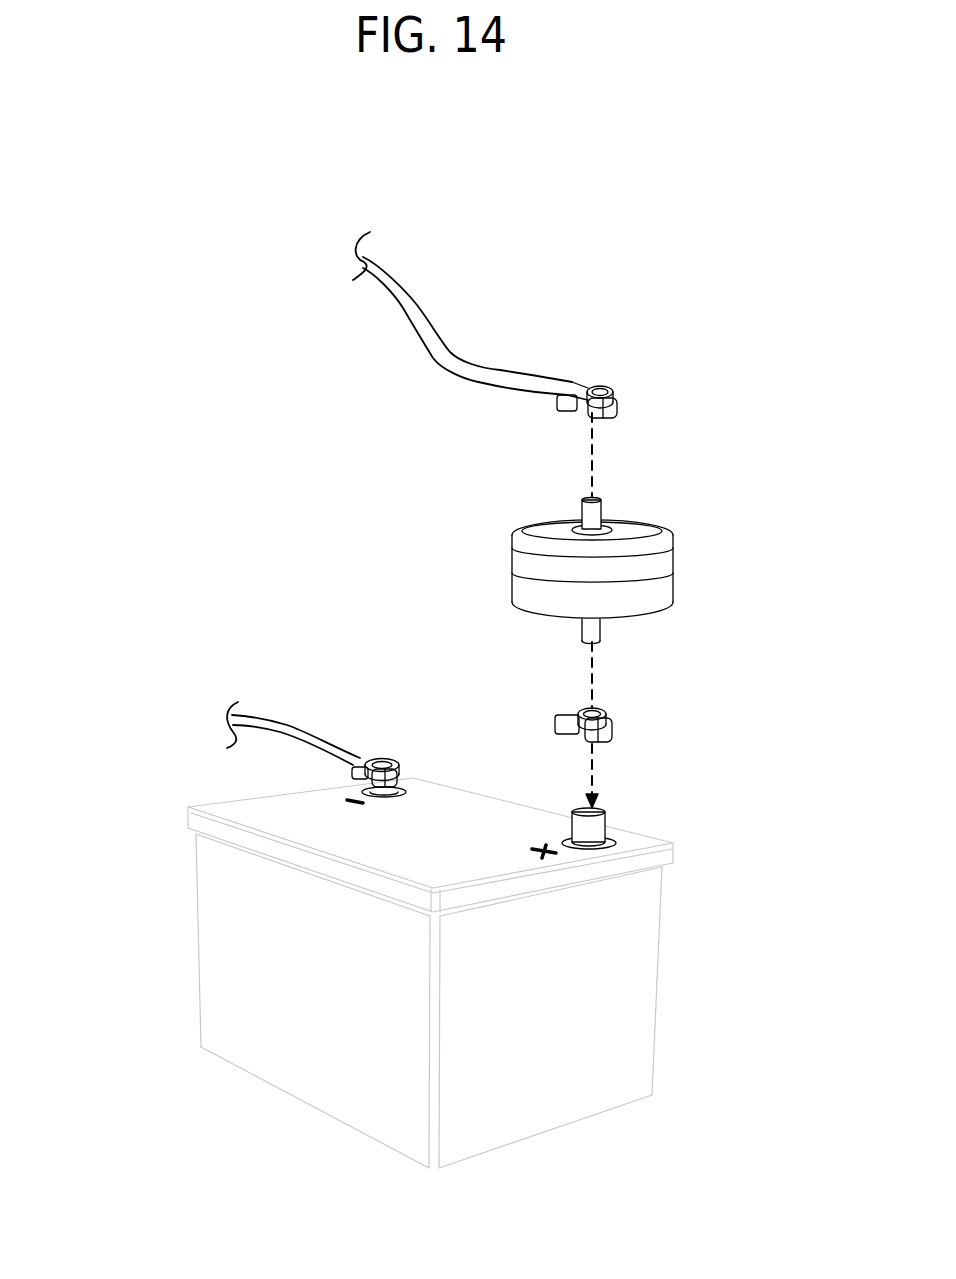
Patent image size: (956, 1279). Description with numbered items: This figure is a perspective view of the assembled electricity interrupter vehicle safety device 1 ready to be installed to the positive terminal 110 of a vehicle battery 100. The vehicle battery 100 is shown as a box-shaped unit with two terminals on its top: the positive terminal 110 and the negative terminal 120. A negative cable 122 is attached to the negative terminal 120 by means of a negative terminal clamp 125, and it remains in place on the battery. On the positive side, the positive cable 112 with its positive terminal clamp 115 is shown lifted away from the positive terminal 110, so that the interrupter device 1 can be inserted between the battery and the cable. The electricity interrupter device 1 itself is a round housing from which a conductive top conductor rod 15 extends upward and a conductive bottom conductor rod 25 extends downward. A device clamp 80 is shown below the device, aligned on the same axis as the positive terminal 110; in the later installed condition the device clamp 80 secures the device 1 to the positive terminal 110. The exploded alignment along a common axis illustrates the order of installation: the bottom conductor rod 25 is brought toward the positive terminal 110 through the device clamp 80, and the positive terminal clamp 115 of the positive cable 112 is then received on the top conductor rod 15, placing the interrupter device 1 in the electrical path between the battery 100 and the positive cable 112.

The electricity interrupter device 1 is at (672, 529).
The top conductor rod 15 is at (592, 515).
The bottom conductor rod 25 is at (596, 631).
The device clamp 80 is at (610, 728).
The vehicle battery 100 is at (237, 960).
The positive terminal 110 is at (597, 827).
The positive cable 112 is at (457, 355).
The positive terminal clamp 115 is at (617, 397).
The negative terminal 120 is at (378, 763).
The negative cable 122 is at (279, 724).
The negative terminal clamp 125 is at (363, 772).